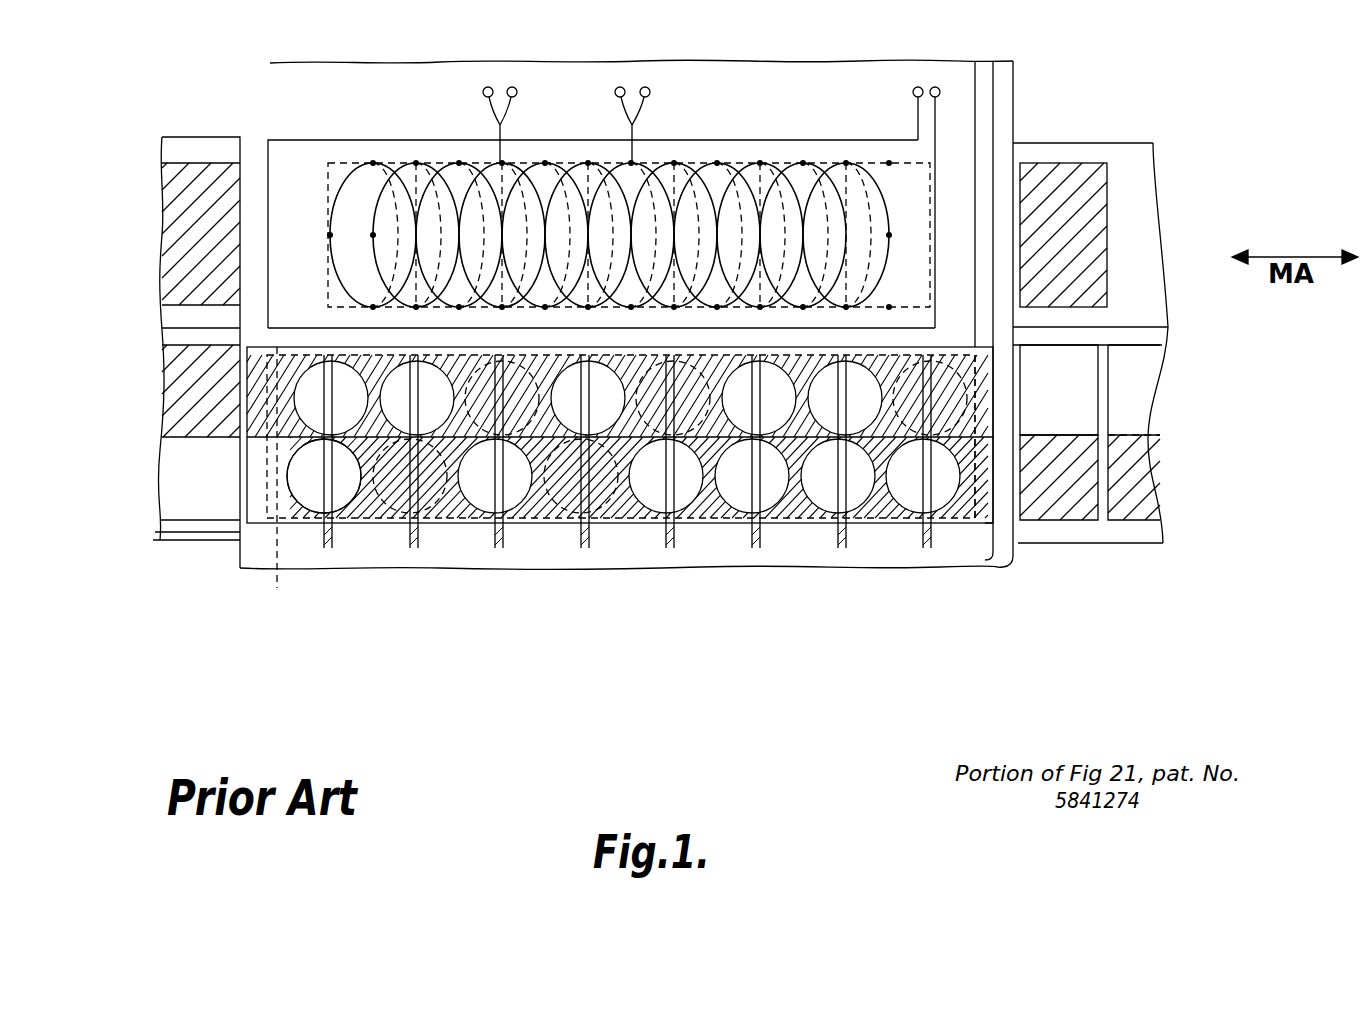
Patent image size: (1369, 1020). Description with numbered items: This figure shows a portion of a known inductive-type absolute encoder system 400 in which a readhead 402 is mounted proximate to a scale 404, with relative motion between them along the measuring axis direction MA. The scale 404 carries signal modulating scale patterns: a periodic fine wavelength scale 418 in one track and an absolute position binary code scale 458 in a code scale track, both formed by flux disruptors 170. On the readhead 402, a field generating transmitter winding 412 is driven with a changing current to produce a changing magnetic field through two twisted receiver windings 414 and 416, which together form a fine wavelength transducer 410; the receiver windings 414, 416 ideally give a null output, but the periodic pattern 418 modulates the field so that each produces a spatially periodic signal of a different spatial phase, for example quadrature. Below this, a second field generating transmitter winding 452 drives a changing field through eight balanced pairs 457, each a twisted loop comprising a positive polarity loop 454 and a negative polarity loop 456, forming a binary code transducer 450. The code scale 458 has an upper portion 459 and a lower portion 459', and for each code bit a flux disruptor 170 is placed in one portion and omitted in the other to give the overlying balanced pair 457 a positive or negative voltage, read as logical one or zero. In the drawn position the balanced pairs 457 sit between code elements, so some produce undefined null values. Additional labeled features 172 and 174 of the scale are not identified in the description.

The inductive-type absolute encoder system 400 is at (566, 604).
The readhead 402 is at (770, 75).
The scale 404 is at (1150, 165).
The fine wavelength transducer 410 is at (256, 107).
The field generating transmitter winding 412 is at (915, 110).
The receiver winding 414 is at (497, 122).
The receiver winding 416 is at (626, 127).
The fine wavelength scale 418 is at (1150, 180).
The binary code transducer 450 is at (712, 580).
The field generating transmitter winding 452 is at (997, 92).
The positive polarity loop 454 is at (270, 486).
The negative polarity loop 456 is at (305, 506).
The balanced pairs 457 is at (1010, 560).
The binary code scale 458 is at (132, 433).
The upper portion 459 is at (1203, 390).
The lower portion 459' is at (1208, 477).
The flux disruptor 170 is at (1077, 170).
The compartment 172 is at (1085, 385).
The base plate 174 is at (198, 538).